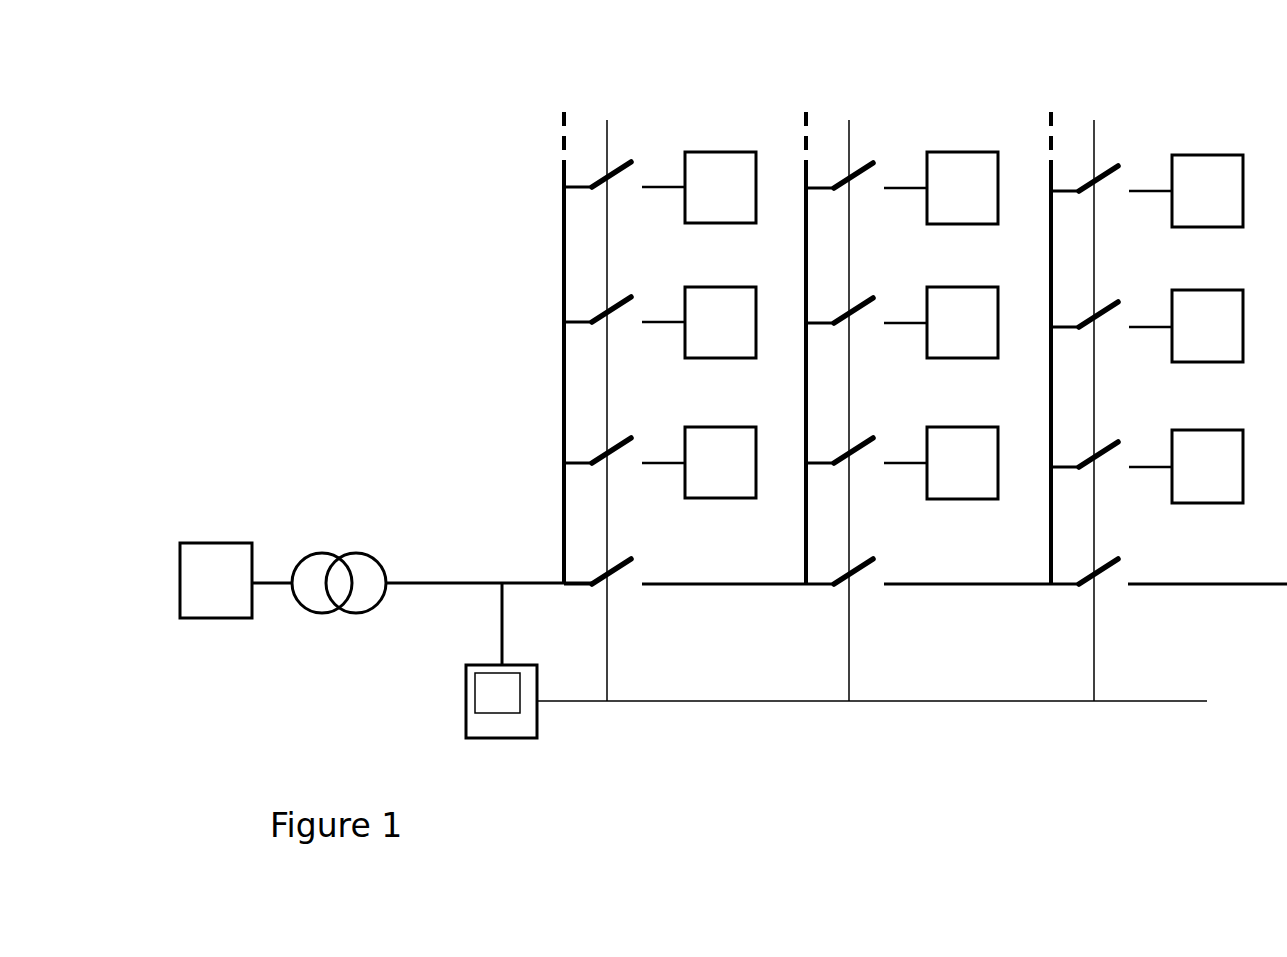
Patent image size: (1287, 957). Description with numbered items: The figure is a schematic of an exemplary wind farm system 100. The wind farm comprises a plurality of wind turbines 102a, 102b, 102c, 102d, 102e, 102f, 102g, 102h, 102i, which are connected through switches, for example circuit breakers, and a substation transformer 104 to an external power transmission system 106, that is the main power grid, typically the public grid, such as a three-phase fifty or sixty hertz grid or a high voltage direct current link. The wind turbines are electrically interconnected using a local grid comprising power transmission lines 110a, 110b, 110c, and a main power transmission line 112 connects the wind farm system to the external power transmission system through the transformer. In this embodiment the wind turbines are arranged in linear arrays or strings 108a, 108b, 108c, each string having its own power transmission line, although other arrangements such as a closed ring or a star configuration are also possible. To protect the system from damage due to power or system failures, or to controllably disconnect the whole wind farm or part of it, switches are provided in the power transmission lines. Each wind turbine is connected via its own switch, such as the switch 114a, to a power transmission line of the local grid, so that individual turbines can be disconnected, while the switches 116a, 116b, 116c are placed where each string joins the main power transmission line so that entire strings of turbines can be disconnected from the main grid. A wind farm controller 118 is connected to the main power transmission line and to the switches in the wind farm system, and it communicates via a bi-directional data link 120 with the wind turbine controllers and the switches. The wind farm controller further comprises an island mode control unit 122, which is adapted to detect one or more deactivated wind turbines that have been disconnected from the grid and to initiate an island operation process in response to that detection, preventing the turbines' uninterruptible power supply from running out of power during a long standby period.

The wind farm system 100 is at (913, 805).
The wind turbine 102a is at (699, 187).
The wind turbine 102b is at (699, 322).
The wind turbine 102c is at (699, 462).
The wind turbine 102d is at (941, 188).
The wind turbine 102e is at (941, 322).
The wind turbine 102f is at (941, 463).
The wind turbine 102g is at (1186, 191).
The wind turbine 102h is at (1186, 326).
The wind turbine 102i is at (1186, 466).
The transformer 104 is at (319, 565).
The external power transmission system 106 is at (216, 580).
The linear array 108a is at (603, 405).
The linear array 108b is at (902, 407).
The linear array 108c is at (1147, 407).
The power transmission line 110a is at (562, 430).
The power transmission line 110b is at (803, 433).
The power transmission line 110c is at (1047, 437).
The main power transmission line 112 is at (522, 582).
The switch 114a is at (600, 175).
The switch 116a is at (622, 590).
The switch 116b is at (867, 595).
The switch 116c is at (1111, 597).
The wind farm controller 118 is at (461, 678).
The bi-directional data link 120 is at (872, 720).
The island mode control unit 122 is at (478, 682).